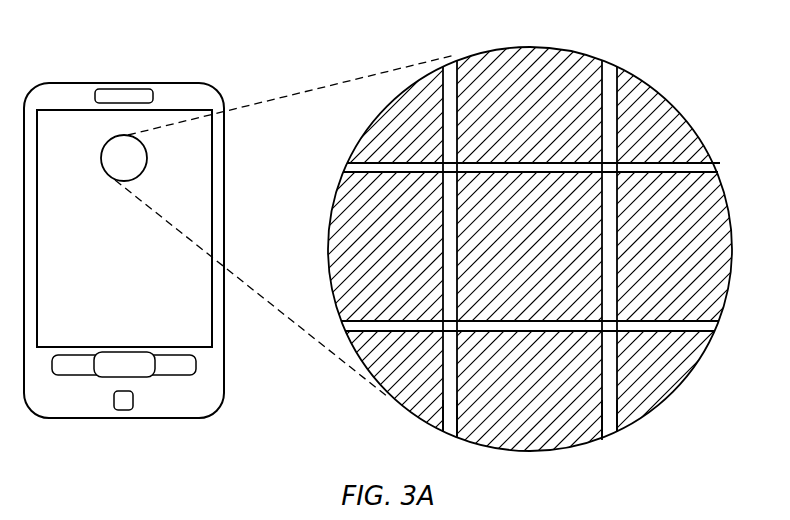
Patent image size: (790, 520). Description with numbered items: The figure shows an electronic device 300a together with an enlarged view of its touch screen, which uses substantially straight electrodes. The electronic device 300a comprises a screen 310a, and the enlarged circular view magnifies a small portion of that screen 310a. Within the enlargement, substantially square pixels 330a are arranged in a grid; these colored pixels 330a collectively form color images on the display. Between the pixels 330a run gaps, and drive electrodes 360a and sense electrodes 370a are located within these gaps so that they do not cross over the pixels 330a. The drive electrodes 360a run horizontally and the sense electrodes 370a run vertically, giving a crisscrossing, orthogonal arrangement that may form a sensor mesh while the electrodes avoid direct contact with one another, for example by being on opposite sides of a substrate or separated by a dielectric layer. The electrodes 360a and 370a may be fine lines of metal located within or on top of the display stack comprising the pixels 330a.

The electronic device 300a is at (70, 79).
The screen 310a is at (202, 322).
The pixels 330a is at (387, 144).
The drive electrodes 360a is at (698, 170).
The sense electrodes 370a is at (446, 418).